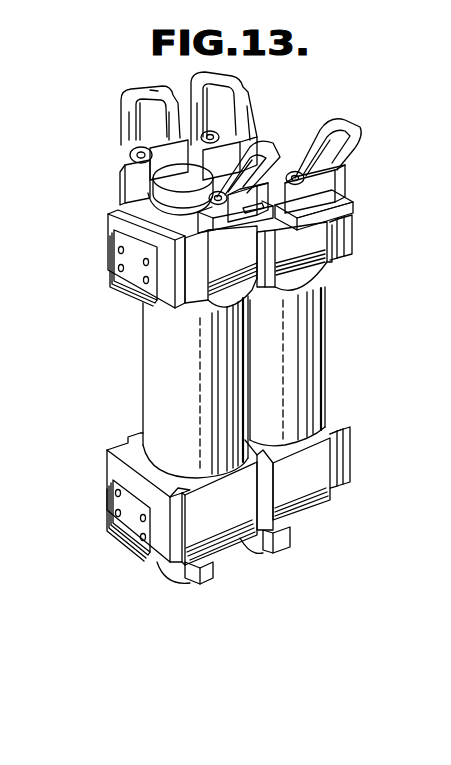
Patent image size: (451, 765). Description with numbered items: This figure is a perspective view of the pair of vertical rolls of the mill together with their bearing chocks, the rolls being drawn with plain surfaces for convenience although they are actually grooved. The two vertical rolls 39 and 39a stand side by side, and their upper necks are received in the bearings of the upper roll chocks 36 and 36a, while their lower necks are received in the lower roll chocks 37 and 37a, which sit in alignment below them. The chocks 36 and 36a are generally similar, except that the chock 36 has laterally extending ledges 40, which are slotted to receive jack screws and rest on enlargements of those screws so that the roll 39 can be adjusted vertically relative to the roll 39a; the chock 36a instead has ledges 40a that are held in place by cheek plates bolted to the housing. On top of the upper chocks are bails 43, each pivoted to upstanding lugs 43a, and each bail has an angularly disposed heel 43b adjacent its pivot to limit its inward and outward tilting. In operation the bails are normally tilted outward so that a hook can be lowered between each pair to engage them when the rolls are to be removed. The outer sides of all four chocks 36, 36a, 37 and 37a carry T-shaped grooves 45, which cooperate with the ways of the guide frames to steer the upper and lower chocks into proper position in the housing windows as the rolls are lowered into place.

The roll chock 36 is at (220, 280).
The roll chock 36a is at (300, 240).
The roll chock 37 is at (223, 532).
The roll chock 37a is at (297, 500).
The vertical roll 39 is at (150, 364).
The vertical roll 39a is at (324, 364).
The ledge 40 is at (256, 232).
The ledge 40a is at (347, 210).
The bail 43 is at (127, 105).
The lug 43a is at (140, 133).
The heel 43b is at (140, 160).
The T-shaped groove 45 is at (153, 237).